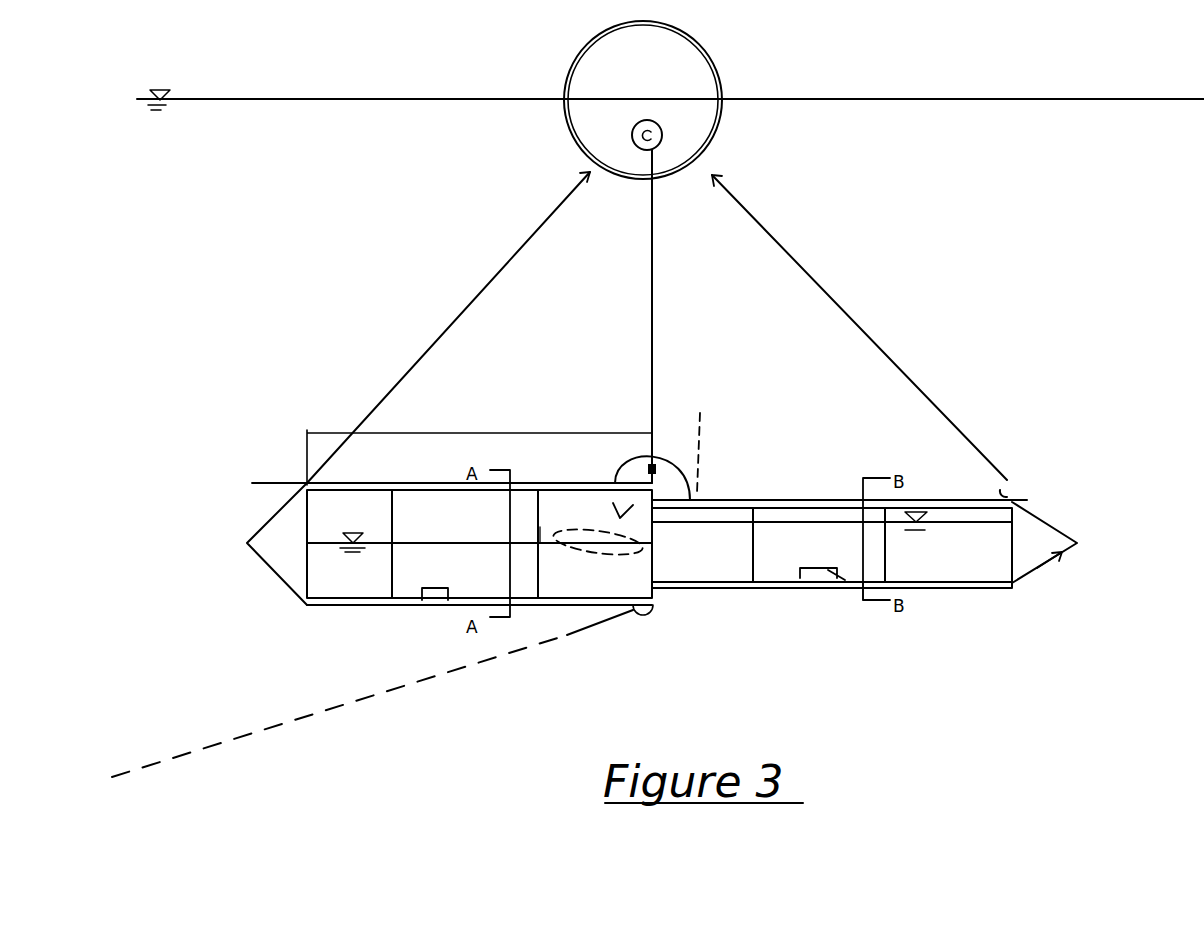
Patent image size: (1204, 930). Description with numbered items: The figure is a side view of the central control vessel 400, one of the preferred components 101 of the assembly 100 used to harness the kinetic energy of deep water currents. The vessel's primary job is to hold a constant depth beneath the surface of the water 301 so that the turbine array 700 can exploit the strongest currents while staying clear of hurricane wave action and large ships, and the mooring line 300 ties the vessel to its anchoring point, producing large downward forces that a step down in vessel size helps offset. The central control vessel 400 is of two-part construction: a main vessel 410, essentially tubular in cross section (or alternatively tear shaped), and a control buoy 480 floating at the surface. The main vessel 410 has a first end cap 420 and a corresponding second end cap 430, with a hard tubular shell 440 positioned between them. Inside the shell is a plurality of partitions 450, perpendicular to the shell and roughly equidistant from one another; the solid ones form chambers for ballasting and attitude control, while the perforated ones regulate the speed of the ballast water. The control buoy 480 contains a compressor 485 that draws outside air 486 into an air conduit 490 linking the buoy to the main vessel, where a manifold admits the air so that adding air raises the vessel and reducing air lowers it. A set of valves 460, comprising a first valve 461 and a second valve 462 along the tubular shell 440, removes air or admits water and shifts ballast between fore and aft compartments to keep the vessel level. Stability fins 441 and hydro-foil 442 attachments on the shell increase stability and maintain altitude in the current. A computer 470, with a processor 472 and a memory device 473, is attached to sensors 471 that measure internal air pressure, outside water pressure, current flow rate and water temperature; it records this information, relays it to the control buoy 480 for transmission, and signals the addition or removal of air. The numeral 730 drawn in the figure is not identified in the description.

The assembly 100 is at (380, 603).
The preferred components 101 is at (420, 485).
The mooring line 300 is at (607, 637).
The surface of the water 301 is at (1060, 99).
The central control vessel 400 is at (818, 500).
The main vessel 410 is at (718, 500).
The first end cap 420 is at (280, 562).
The second end cap 430 is at (1062, 556).
The tubular shell 440 is at (698, 567).
The stability fins 441 is at (595, 587).
The hydro-foil attachments 442 is at (620, 438).
The partitions 450 is at (540, 527).
The set of valves 460 is at (865, 588).
The first valve 461 is at (437, 598).
The second valve 462 is at (803, 587).
The computer 470 is at (923, 500).
The sensors 471 is at (966, 514).
The processor 472 is at (950, 530).
The memory device 473 is at (937, 543).
The control buoy 480 is at (663, 128).
The compressor 485 is at (707, 133).
The outside air 486 is at (567, 130).
The air conduit 490 is at (652, 267).
The turbine array 700 is at (330, 605).
The signal line 730 is at (648, 217).